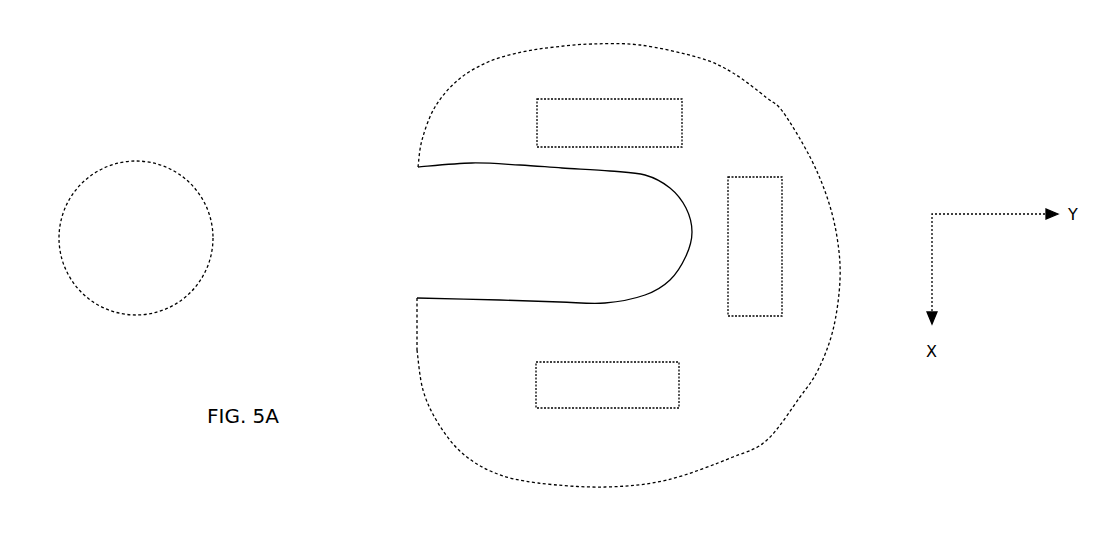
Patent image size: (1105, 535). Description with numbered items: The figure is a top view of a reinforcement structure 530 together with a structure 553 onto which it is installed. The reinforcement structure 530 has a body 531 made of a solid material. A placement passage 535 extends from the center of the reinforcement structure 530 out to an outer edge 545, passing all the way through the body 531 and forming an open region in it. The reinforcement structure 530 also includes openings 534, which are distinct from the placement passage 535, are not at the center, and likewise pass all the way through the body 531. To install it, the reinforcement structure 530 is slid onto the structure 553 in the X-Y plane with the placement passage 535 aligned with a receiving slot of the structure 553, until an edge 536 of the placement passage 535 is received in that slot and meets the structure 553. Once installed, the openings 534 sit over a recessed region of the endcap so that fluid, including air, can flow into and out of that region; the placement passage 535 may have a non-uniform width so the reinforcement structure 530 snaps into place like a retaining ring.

The reinforcement structure 530 is at (411, 39).
The body 531 is at (750, 127).
The openings 534 is at (659, 253).
The placement passage 535 is at (448, 220).
The edge 536 is at (692, 232).
The outer edge 545 is at (418, 350).
The structure 553 is at (136, 238).